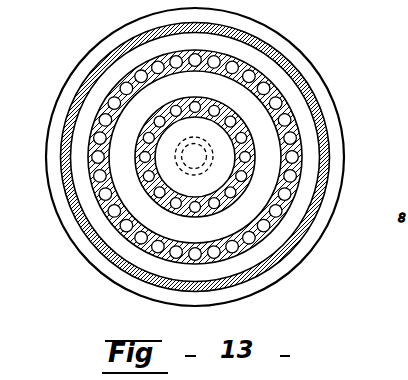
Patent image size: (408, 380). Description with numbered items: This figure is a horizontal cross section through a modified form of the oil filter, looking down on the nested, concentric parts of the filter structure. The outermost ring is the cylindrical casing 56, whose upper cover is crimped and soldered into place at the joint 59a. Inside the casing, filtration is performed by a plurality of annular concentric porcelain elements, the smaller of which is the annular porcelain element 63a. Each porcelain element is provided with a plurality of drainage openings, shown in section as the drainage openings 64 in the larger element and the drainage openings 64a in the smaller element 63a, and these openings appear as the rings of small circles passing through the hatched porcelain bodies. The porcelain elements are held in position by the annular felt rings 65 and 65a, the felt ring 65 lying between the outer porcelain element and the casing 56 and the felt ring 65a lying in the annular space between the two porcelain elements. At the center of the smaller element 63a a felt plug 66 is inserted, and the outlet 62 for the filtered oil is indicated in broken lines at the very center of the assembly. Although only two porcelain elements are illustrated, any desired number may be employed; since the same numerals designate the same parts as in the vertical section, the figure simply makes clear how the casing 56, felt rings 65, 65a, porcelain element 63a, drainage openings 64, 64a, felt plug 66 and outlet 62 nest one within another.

The joint 59a is at (325, 103).
The cylindrical casing 56 is at (325, 132).
The annular felt ring 65 is at (306, 198).
The annular felt ring 65a is at (214, 240).
The drainage openings 64 is at (158, 258).
The annular porcelain element 63a is at (206, 93).
The drainage openings 64a is at (143, 193).
The felt plug 66 is at (207, 194).
The outlet 62 is at (194, 156).